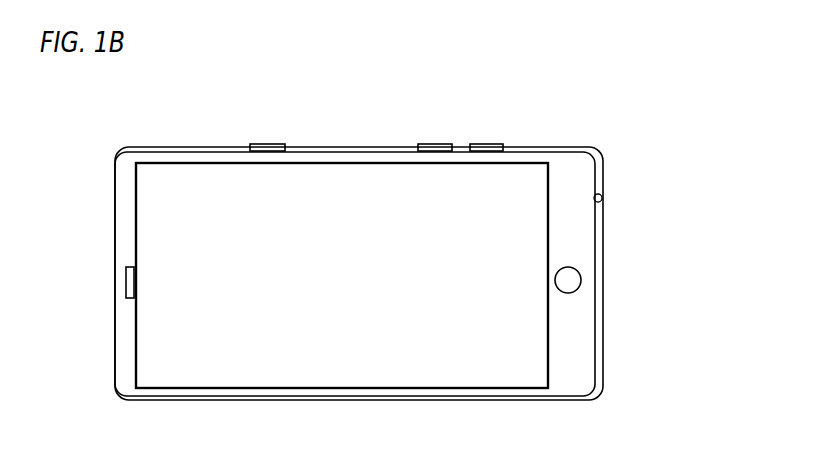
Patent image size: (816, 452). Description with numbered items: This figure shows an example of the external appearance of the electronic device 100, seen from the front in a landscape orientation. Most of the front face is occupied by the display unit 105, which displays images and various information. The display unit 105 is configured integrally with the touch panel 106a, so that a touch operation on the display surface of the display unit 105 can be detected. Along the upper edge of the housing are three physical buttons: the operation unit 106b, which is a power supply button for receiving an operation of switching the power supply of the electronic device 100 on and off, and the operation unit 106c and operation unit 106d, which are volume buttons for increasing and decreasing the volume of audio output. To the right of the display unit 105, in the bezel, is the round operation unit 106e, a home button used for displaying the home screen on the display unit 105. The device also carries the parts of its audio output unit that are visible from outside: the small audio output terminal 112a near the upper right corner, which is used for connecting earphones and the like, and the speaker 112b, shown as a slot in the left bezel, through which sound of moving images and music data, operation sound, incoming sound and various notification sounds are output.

The electronic device 100 is at (572, 355).
The display unit 105 is at (329, 229).
The touch panel 106a is at (200, 178).
The operation unit 106b is at (255, 145).
The operation unit 106c is at (425, 145).
The operation unit 106d is at (495, 145).
The operation unit 106e is at (569, 278).
The audio output terminal 112a is at (601, 196).
The speaker 112b is at (127, 275).